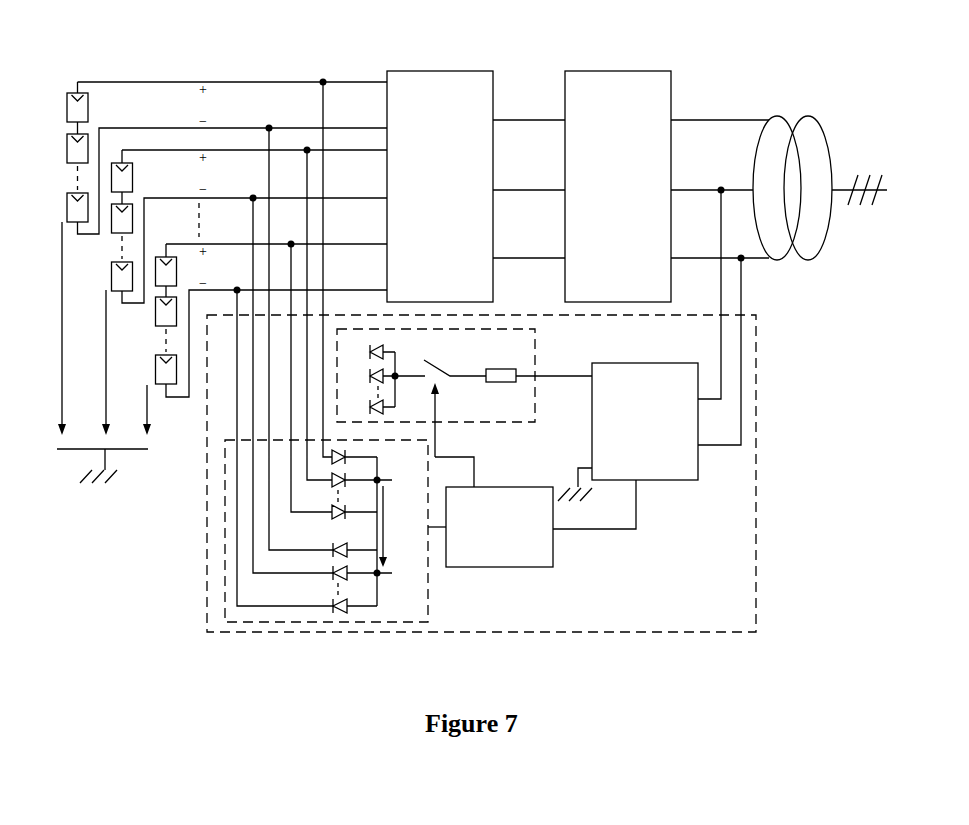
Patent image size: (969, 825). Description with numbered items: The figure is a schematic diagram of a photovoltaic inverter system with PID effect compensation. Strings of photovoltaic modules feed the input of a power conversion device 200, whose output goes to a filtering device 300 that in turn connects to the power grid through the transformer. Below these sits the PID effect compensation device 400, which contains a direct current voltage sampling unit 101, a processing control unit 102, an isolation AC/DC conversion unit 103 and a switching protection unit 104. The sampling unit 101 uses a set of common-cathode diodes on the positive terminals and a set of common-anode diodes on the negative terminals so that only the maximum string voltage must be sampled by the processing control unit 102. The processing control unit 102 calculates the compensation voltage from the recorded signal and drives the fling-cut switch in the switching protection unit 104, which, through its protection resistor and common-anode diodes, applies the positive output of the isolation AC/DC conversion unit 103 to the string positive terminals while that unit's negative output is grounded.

The power conversion device 200 is at (487, 70).
The filtering device 300 is at (665, 70).
The PID effect compensation device 400 is at (497, 473).
The direct current voltage sampling unit 101 is at (430, 592).
The processing control unit 102 is at (553, 550).
The isolation AC/DC conversion unit 103 is at (700, 468).
The switching protection unit 104 is at (540, 353).